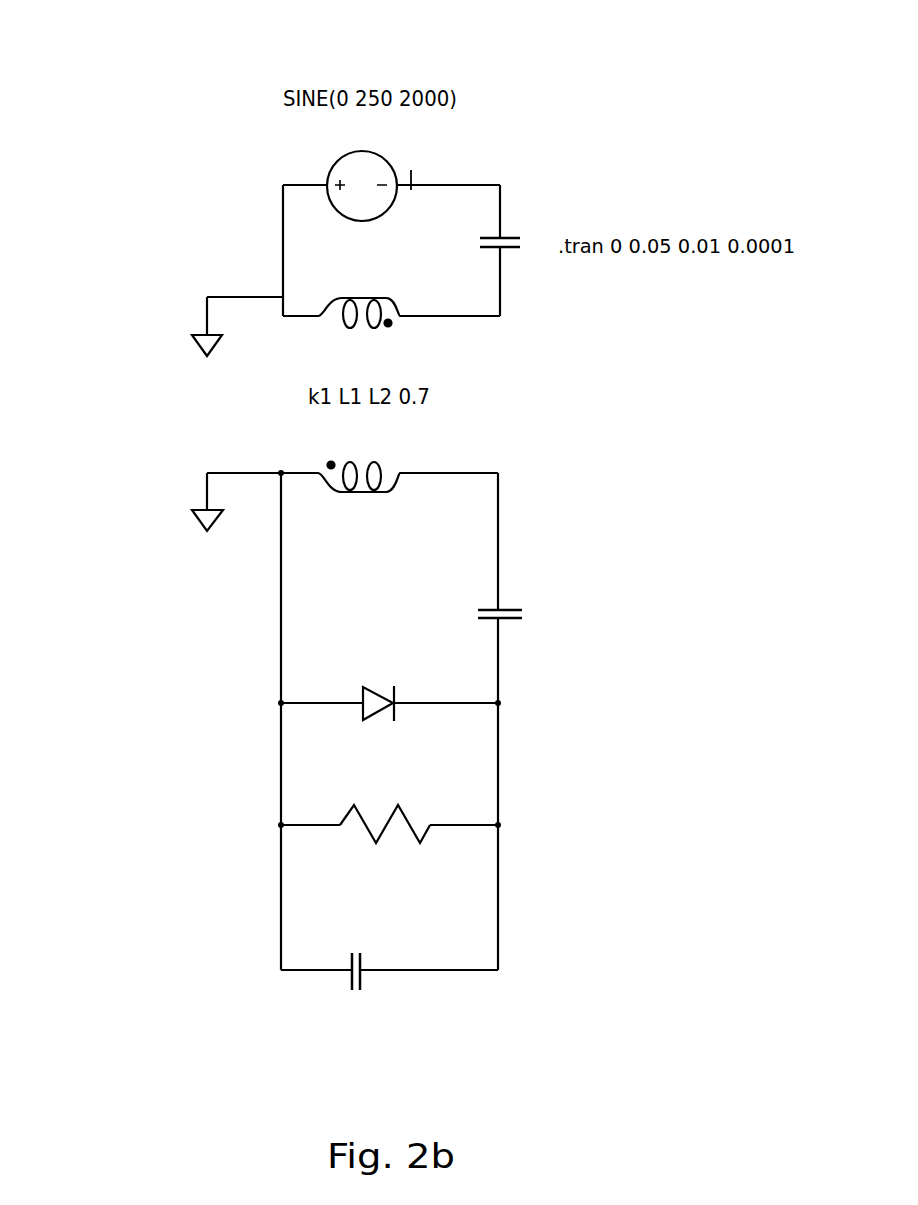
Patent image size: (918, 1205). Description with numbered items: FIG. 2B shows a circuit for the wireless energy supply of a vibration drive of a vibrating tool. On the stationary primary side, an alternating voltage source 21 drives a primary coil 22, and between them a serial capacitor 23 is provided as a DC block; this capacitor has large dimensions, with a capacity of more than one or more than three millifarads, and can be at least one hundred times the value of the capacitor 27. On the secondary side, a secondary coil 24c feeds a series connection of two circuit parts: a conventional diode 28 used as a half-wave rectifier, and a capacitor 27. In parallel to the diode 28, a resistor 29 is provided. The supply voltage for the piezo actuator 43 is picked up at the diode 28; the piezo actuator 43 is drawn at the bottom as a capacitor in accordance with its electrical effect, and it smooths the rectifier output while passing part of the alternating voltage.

The alternating voltage source 21 is at (447, 166).
The primary coil 22 is at (444, 345).
The serial capacitor 23 is at (572, 203).
The secondary coil 24c is at (413, 456).
The capacitor 27 is at (563, 603).
The diode 28 is at (322, 661).
The resistor 29 is at (320, 800).
The piezo actuator 43 is at (320, 976).